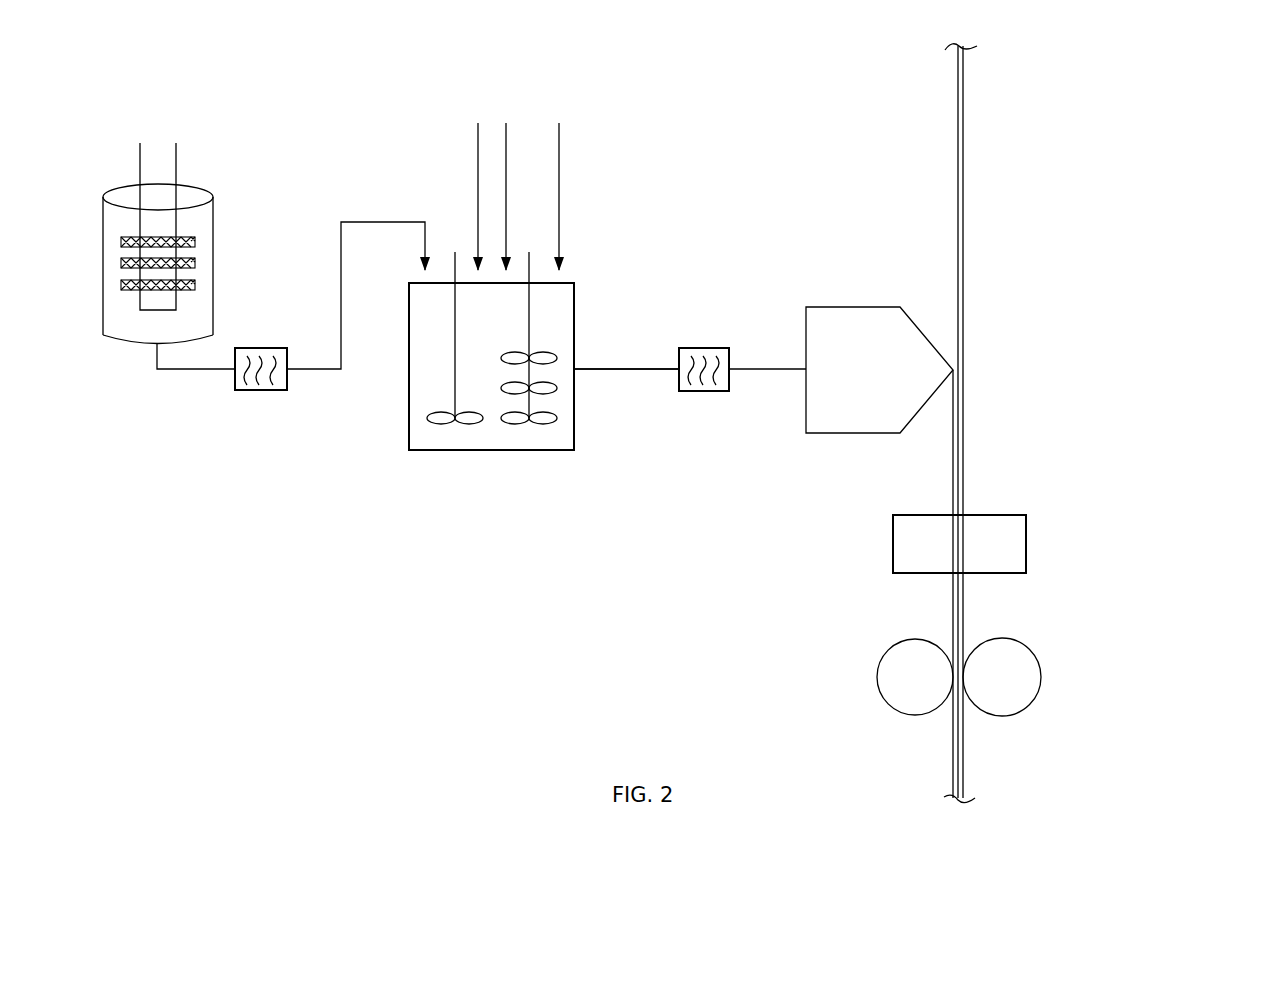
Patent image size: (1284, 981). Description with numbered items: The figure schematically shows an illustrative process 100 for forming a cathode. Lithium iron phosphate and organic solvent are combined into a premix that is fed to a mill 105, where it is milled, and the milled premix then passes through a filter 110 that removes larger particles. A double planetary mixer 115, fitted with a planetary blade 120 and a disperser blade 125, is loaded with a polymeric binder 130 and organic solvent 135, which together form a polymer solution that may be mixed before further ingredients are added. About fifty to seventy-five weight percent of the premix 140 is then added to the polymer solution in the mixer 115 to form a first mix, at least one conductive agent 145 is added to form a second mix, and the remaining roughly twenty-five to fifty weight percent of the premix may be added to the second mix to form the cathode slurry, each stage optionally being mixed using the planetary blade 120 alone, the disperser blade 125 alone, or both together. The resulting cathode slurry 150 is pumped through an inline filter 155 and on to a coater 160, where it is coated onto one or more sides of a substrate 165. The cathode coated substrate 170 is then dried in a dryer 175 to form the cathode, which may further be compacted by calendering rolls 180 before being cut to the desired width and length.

The process 100 is at (1203, 127).
The mill 105 is at (196, 195).
The filter 110 is at (275, 347).
The double planetary mixer 115 is at (540, 443).
The planetary blade 120 is at (452, 323).
The disperser blade 125 is at (530, 323).
The polymeric binder 130 is at (477, 151).
The organic solvent 135 is at (507, 138).
The premix 140 is at (397, 221).
The conductive agent 145 is at (561, 151).
The cathode slurry 150 is at (633, 368).
The inline filter 155 is at (714, 347).
The coater 160 is at (856, 318).
The substrate 165 is at (965, 112).
The cathode coated substrate 170 is at (952, 460).
The dryer 175 is at (1027, 540).
The calendering rolls 180 is at (878, 672).